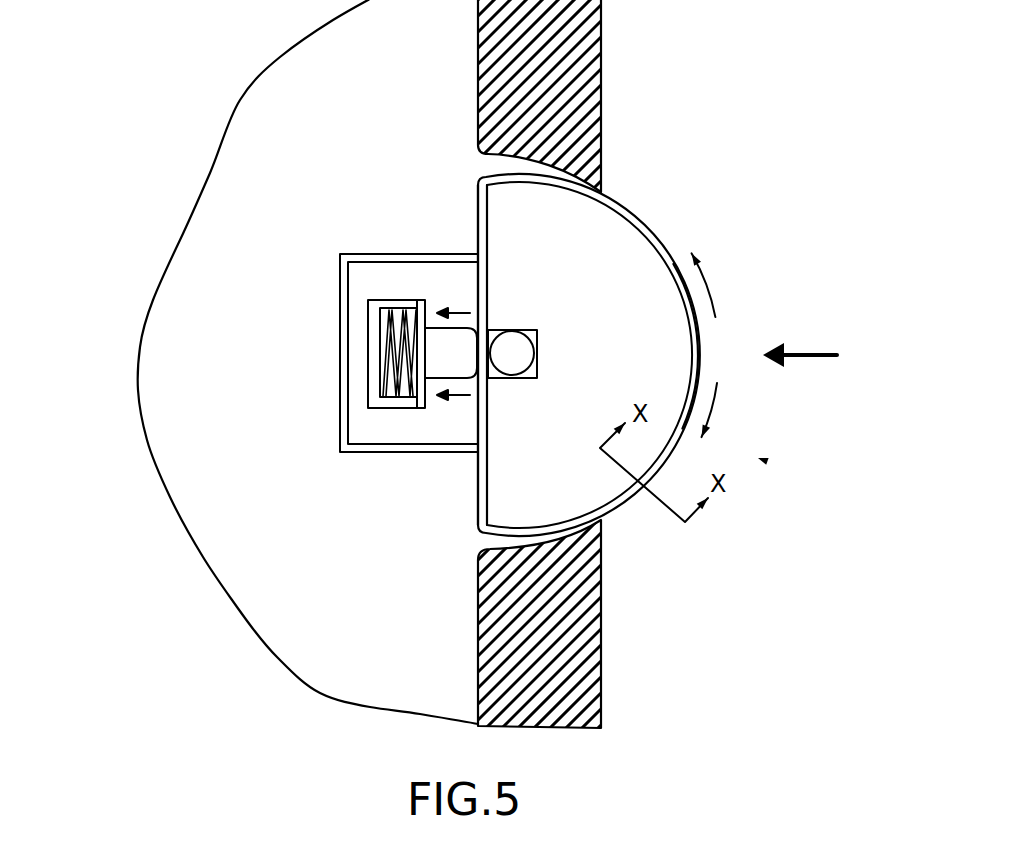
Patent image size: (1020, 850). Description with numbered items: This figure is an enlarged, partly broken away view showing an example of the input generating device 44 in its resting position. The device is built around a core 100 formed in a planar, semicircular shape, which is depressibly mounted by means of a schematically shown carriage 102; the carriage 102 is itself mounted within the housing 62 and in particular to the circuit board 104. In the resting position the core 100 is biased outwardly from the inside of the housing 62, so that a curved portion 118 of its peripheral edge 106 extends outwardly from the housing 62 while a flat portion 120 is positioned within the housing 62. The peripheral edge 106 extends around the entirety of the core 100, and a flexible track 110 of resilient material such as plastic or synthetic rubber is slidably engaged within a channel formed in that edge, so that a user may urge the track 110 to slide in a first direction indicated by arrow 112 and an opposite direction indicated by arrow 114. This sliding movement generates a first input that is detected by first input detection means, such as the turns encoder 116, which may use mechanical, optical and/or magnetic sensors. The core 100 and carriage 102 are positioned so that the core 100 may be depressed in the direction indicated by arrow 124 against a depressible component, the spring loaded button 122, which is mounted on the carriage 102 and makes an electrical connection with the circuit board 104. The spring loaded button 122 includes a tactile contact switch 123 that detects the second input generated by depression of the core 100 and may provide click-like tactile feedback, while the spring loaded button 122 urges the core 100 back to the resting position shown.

The input generating device 44 is at (760, 459).
The housing 62 is at (568, 22).
The core 100 is at (558, 357).
The carriage 102 is at (378, 428).
The circuit board 104 is at (212, 298).
The peripheral edge 106 is at (608, 505).
The flexible track 110 is at (640, 227).
The arrow 112 is at (712, 285).
The arrow 114 is at (717, 403).
The turns encoder 116 is at (512, 352).
The curved portion 118 is at (615, 203).
The flat portion 120 is at (478, 484).
The spring loaded button 122 is at (440, 353).
The tactile contact switch 123 is at (420, 313).
The arrow 124 is at (812, 350).